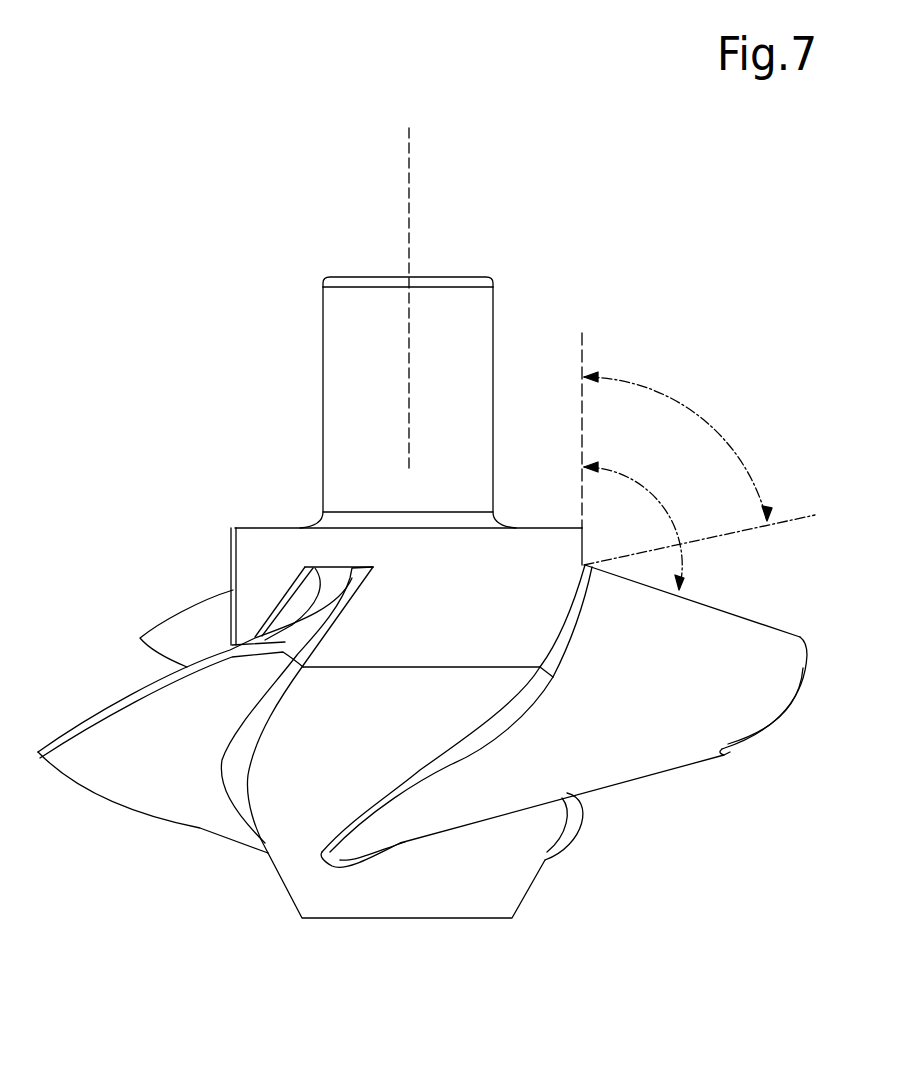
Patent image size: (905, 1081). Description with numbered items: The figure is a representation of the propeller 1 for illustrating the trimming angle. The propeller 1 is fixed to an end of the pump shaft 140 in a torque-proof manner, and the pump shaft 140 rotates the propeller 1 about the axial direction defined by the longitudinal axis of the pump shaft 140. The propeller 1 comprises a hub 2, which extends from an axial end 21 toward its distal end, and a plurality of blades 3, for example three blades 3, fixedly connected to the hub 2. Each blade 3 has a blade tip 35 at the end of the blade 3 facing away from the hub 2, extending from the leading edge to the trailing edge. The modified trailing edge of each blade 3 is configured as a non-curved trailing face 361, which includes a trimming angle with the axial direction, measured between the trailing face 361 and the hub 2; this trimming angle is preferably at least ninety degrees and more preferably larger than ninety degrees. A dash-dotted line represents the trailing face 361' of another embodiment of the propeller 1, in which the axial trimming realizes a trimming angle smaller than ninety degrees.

The propeller 1 is at (585, 178).
The hub 2 is at (295, 792).
The blade 3 is at (663, 747).
The axial end 21 is at (273, 527).
The blade tip 35 is at (765, 725).
The pump shaft 140 is at (340, 360).
The trailing face 361 is at (699, 592).
The trailing face of another embodiment 361' is at (779, 493).